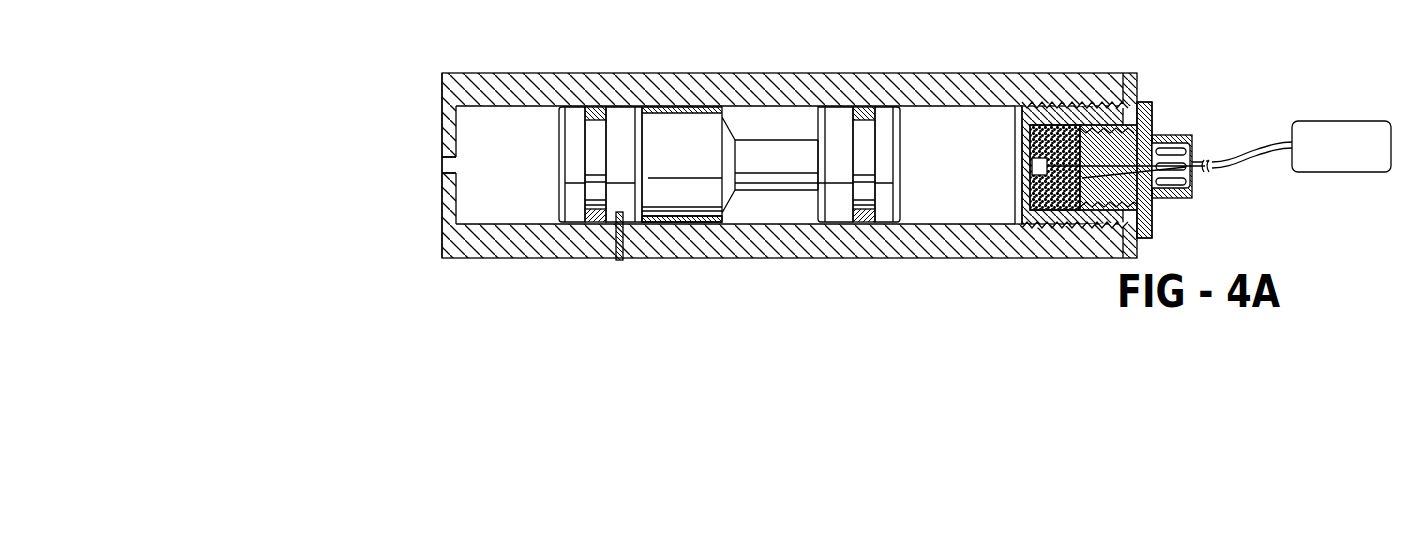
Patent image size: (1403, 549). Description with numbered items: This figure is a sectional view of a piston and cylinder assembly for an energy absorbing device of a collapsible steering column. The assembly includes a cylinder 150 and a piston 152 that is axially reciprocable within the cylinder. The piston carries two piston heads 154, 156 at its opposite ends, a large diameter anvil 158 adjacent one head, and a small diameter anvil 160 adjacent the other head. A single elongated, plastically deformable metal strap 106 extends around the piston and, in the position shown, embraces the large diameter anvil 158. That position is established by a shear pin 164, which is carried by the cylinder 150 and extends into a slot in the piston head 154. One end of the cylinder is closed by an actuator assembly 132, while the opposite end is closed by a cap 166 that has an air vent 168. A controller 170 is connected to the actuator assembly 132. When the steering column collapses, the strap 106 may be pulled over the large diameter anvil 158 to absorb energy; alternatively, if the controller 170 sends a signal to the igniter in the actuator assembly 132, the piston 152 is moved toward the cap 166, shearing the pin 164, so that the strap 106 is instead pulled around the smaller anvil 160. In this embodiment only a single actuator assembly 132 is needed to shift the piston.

The cylinder 150 is at (897, 68).
The cap 166 is at (442, 100).
The air vent 168 is at (442, 166).
The piston 152 is at (548, 118).
The piston head 154 is at (620, 115).
The large diameter anvil 158 is at (706, 130).
The strap 106 is at (693, 224).
The small diameter anvil 160 is at (782, 143).
The piston head 156 is at (833, 115).
The shear pin 164 is at (612, 240).
The actuator assembly 132 is at (1170, 223).
The controller 170 is at (1350, 172).